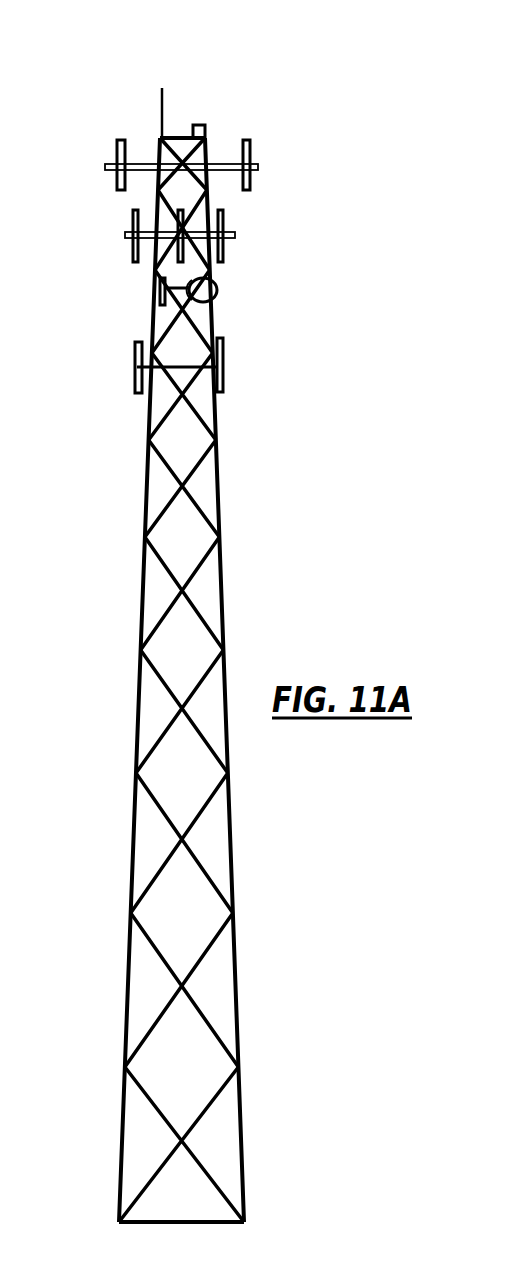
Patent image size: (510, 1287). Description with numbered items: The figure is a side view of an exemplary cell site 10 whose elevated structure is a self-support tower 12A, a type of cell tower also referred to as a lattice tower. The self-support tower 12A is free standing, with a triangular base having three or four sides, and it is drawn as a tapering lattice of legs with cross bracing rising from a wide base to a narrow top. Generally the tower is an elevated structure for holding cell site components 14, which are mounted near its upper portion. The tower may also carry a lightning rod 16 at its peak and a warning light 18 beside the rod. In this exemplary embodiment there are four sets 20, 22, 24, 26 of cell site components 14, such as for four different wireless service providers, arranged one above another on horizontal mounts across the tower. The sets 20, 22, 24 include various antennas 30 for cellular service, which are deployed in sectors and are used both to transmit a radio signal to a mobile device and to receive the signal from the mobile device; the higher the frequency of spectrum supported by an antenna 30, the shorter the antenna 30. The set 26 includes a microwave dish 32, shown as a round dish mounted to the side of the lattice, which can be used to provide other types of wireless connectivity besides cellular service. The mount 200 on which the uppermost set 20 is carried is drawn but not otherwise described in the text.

The cell site 10 is at (283, 60).
The self-support tower 12A is at (237, 940).
The cell site components 14 is at (305, 187).
The lightning rod 16 is at (165, 110).
The warning light 18 is at (200, 123).
The set of cell site components 20 is at (107, 163).
The set of cell site components 22 is at (127, 234).
The set of cell site components 24 is at (136, 352).
The set of cell site components 26 is at (158, 288).
The antennas 30 is at (252, 150).
The microwave dish 32 is at (210, 282).
The antenna boom 200 is at (132, 163).